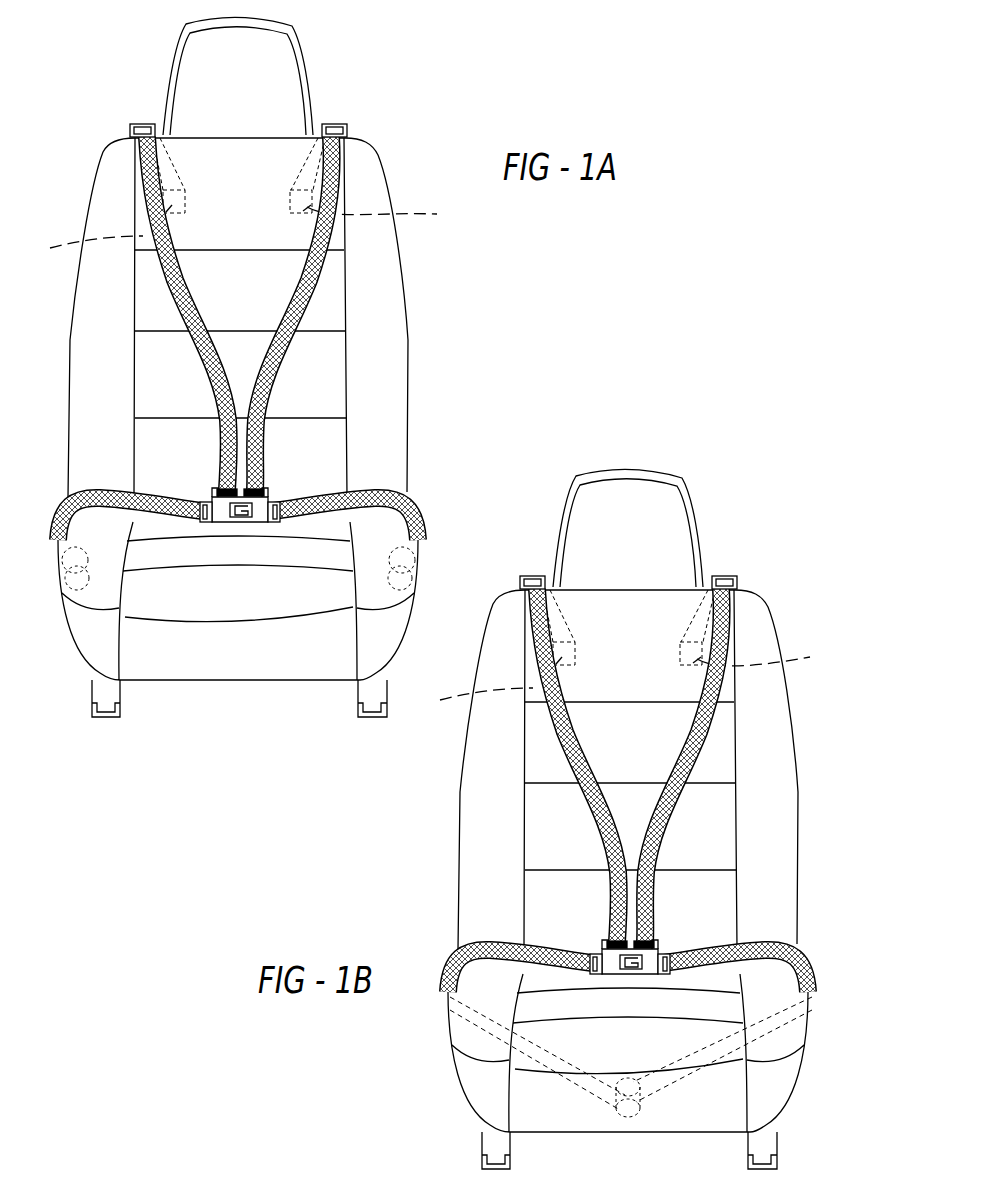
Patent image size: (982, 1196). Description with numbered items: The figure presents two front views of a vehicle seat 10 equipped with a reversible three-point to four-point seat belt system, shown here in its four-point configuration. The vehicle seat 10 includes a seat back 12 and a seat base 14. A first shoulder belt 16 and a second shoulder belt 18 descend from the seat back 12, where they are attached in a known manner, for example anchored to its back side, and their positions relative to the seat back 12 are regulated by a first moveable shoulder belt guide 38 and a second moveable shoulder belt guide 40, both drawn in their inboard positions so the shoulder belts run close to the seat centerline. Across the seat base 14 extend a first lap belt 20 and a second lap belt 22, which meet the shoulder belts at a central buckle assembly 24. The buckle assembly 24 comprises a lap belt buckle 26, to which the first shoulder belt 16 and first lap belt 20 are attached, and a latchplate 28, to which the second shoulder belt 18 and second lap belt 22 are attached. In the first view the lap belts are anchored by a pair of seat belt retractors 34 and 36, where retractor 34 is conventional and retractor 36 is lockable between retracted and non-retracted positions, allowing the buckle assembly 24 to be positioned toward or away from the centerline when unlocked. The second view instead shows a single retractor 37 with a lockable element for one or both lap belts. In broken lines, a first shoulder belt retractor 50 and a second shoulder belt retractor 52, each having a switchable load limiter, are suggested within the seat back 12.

In FIG. 1A, the vehicle seat 10 is at (92, 97).
In FIG. 1B, the vehicle seat 10 is at (629, 785).
In FIG. 1A, the seat back 12 is at (95, 225).
In FIG. 1B, the seat back 12 is at (612, 709).
In FIG. 1A, the seat base 14 is at (97, 623).
In FIG. 1B, the seat base 14 is at (620, 1072).
In FIG. 1A, the first shoulder belt 16 is at (145, 165).
In FIG. 1B, the first shoulder belt 16 is at (534, 758).
In FIG. 1A, the second shoulder belt 18 is at (313, 275).
In FIG. 1B, the second shoulder belt 18 is at (741, 765).
In FIG. 1A, the first lap belt 20 is at (110, 497).
In FIG. 1B, the first lap belt 20 is at (510, 952).
In FIG. 1A, the second lap belt 22 is at (365, 497).
In FIG. 1B, the second lap belt 22 is at (747, 942).
In FIG. 1A, the buckle assembly 24 is at (250, 506).
In FIG. 1B, the buckle assembly 24 is at (547, 916).
In FIG. 1A, the lap belt buckle 26 is at (207, 497).
In FIG. 1B, the lap belt buckle 26 is at (525, 882).
In FIG. 1A, the latchplate 28 is at (293, 493).
In FIG. 1B, the latchplate 28 is at (736, 872).
In FIG. 1A, the seat belt retractor 34 is at (70, 577).
In FIG. 1A, the seat belt retractor 36 is at (405, 562).
In FIG. 1B, the single retractor 37 is at (631, 1082).
In FIG. 1A, the first moveable shoulder belt guide 38 is at (147, 122).
In FIG. 1B, the first moveable shoulder belt guide 38 is at (521, 533).
In FIG. 1A, the second moveable shoulder belt guide 40 is at (333, 123).
In FIG. 1B, the second moveable shoulder belt guide 40 is at (767, 544).
In FIG. 1A, the first shoulder belt retractor 50 is at (110, 206).
In FIG. 1B, the first shoulder belt retractor 50 is at (501, 659).
In FIG. 1A, the second shoulder belt retractor 52 is at (377, 186).
In FIG. 1B, the second shoulder belt retractor 52 is at (757, 631).